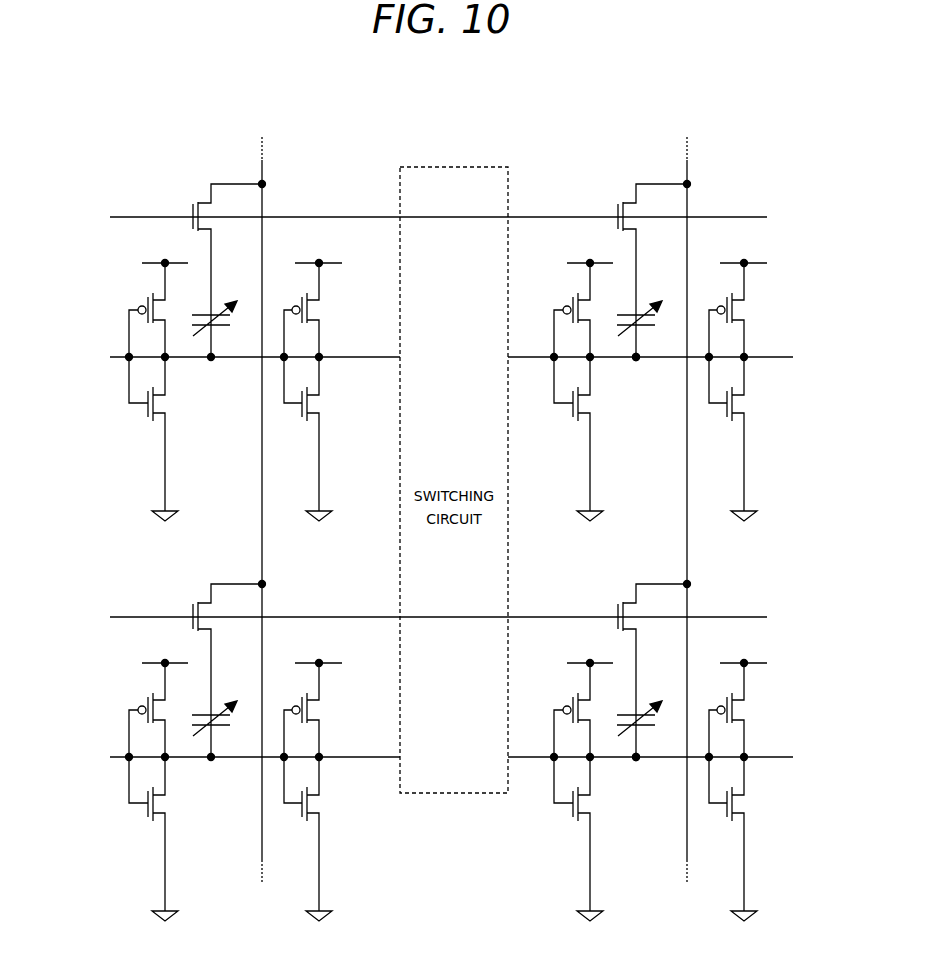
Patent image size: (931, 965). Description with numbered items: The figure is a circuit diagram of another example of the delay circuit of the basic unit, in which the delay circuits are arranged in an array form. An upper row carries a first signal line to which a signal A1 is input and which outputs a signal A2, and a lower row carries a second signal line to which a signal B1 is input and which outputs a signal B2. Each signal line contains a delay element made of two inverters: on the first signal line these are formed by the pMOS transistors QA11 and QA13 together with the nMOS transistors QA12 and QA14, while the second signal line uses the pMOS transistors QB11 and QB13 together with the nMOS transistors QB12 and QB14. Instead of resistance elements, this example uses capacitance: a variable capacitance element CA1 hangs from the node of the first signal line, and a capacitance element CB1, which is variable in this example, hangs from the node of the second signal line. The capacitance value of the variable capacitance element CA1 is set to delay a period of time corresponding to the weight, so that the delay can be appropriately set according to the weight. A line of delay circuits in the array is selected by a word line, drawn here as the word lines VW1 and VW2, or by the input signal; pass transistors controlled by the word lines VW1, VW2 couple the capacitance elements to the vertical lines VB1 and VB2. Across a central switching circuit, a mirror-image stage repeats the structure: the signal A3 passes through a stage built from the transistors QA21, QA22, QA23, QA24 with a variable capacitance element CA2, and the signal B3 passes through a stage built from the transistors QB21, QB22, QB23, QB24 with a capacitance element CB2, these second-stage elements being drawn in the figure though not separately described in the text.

The bit line VB1 is at (262, 498).
The bit line VB2 is at (687, 498).
The word line VW1 is at (413, 249).
The word line VW2 is at (413, 649).
The pMOS transistor QA11 is at (146, 302).
The nMOS transistor QA12 is at (146, 411).
The pMOS transistor QA13 is at (327, 301).
The nMOS transistor QA14 is at (327, 409).
The P-channel transistor QA21 is at (565, 305).
The N-channel transistor QA22 is at (560, 439).
The P-channel transistor QA23 is at (767, 305).
The N-channel transistor QA24 is at (767, 439).
The pMOS transistor QB11 is at (115, 709).
The nMOS transistor QB12 is at (110, 839).
The pMOS transistor QB13 is at (338, 705).
The nMOS transistor QB14 is at (337, 839).
The P-channel transistor QB21 is at (564, 705).
The N-channel transistor QB22 is at (535, 839).
The P-channel transistor QB23 is at (767, 705).
The N-channel transistor QB24 is at (767, 839).
The variable capacitance element CA1 is at (220, 332).
The variable capacitor CA2 is at (647, 351).
The capacitance element CB1 is at (221, 750).
The variable capacitor CB2 is at (646, 751).
The signal A1 is at (168, 356).
The signal A2 is at (331, 344).
The node A3 is at (650, 344).
The signal B1 is at (168, 756).
The signal B2 is at (331, 744).
The node B3 is at (650, 744).